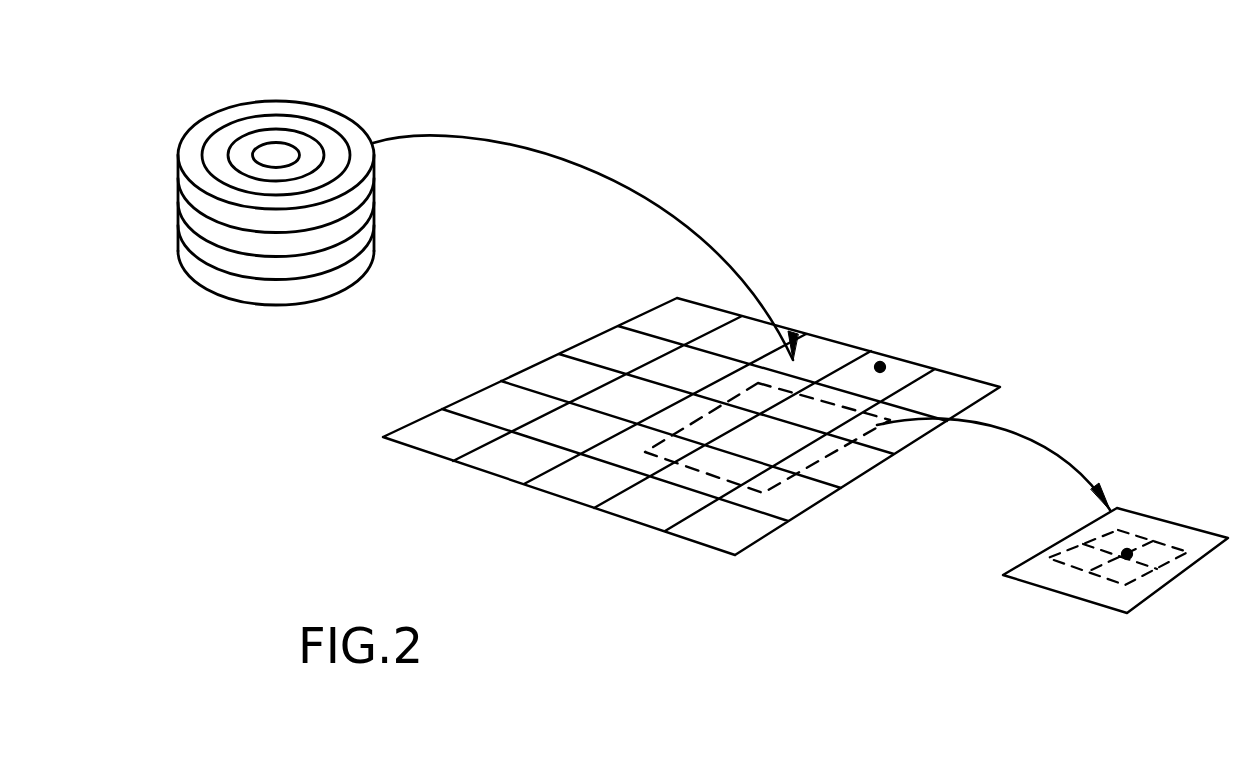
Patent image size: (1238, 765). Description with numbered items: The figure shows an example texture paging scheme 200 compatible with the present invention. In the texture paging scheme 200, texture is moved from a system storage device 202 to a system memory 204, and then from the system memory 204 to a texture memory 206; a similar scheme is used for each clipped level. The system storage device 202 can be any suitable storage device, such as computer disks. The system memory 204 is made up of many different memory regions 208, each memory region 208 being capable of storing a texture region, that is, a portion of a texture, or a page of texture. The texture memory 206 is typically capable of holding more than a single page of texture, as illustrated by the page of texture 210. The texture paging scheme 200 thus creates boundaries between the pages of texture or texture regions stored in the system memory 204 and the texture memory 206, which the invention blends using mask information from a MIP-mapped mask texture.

The texture paging scheme 200 is at (866, 144).
The system storage device 202 is at (276, 305).
The system memory 204 is at (557, 497).
The texture memory 206 is at (1062, 597).
The memory region 208 is at (880, 367).
The page of texture 210 is at (1127, 554).